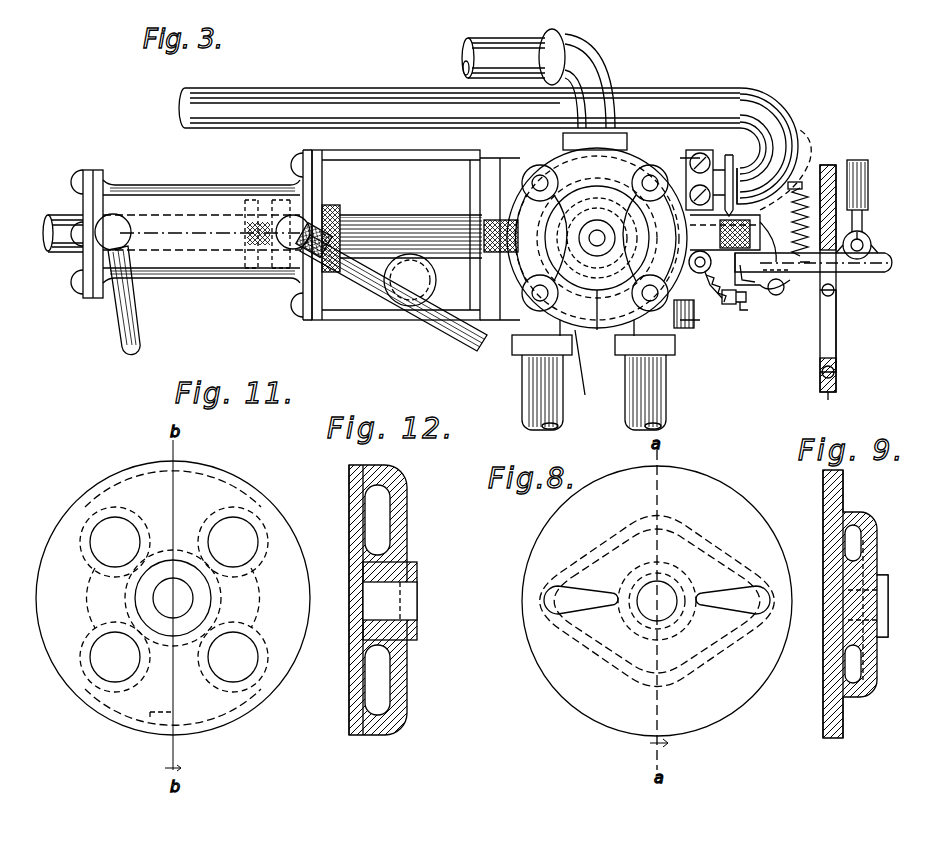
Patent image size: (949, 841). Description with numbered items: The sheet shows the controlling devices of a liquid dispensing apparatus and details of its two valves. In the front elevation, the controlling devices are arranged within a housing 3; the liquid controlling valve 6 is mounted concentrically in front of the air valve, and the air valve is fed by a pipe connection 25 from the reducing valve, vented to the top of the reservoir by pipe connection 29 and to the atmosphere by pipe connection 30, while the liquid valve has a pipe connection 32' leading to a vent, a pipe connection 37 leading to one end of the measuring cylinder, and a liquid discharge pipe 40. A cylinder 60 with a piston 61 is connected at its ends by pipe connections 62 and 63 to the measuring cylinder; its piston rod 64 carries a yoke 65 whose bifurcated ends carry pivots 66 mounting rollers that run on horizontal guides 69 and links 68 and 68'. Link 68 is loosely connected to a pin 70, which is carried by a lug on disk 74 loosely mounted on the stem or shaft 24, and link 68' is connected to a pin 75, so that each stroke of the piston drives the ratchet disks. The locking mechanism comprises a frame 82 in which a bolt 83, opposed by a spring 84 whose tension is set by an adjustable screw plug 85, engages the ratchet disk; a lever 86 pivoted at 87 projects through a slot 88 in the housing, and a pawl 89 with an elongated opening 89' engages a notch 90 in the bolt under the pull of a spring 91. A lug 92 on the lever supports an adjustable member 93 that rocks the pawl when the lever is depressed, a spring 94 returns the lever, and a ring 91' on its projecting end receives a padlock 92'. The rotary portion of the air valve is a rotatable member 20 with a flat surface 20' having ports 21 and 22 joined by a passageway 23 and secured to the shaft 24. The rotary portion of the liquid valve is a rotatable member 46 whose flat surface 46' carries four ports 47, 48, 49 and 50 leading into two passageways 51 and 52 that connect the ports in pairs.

In FIG. 3, the housing 3 is at (832, 395).
In FIG. 3, the liquid controlling valve 6 is at (628, 150).
In FIG. 8, the rotatable member 20 is at (657, 611).
In FIG. 9, the rotatable member 20 is at (855, 630).
In FIG. 8, the flat surface 20' is at (657, 607).
In FIG. 9, the flat surface 20' is at (806, 604).
In FIG. 8, the port 21 is at (752, 612).
In FIG. 8, the port 22 is at (562, 612).
In FIG. 8, the passageway or channel 23 is at (636, 678).
In FIG. 9, the passageway or channel 23 is at (850, 540).
In FIG. 3, the stem or shaft 24 is at (592, 246).
In FIG. 3, the pipe connection 25 is at (500, 40).
In FIG. 3, the pipe connection 29 is at (522, 400).
In FIG. 3, the pipe connection 30 is at (666, 388).
In FIG. 3, the pipe connection 32' is at (401, 305).
In FIG. 3, the pipe connection 37 is at (48, 224).
In FIG. 3, the liquid discharge pipe 40 is at (340, 88).
In FIG. 11, the rotatable member 46 is at (182, 605).
In FIG. 12, the rotatable member 46 is at (381, 612).
In FIG. 11, the flat surface 46' is at (189, 598).
In FIG. 12, the flat surface 46' is at (331, 612).
In FIG. 11, the port 47 is at (233, 540).
In FIG. 11, the port 48 is at (115, 540).
In FIG. 11, the port 49 is at (115, 660).
In FIG. 11, the port 50 is at (228, 668).
In FIG. 11, the passageway 51 is at (143, 482).
In FIG. 12, the passageway 51 is at (385, 538).
In FIG. 11, the passageway 52 is at (150, 722).
In FIG. 12, the passageway 52 is at (385, 668).
In FIG. 3, the cylinder 60 is at (162, 190).
In FIG. 3, the piston 61 is at (258, 195).
In FIG. 3, the pipe connection 62 is at (136, 312).
In FIG. 3, the pipe connection 63 is at (450, 337).
In FIG. 3, the piston rod 64 is at (392, 228).
In FIG. 3, the yoke 65 is at (505, 222).
In FIG. 3, the pivot 66 is at (532, 193).
In FIG. 3, the link 68 is at (591, 206).
In FIG. 3, the link 68' is at (597, 348).
In FIG. 3, the horizontal guides 69 is at (378, 162).
In FIG. 3, the pin 70 is at (650, 183).
In FIG. 3, the disk 74 is at (586, 348).
In FIG. 3, the pin 75 is at (678, 325).
In FIG. 3, the frame 82 is at (752, 282).
In FIG. 3, the bolt 83 is at (718, 170).
In FIG. 3, the spring 84 is at (760, 218).
In FIG. 3, the adjustable screw plug 85 is at (760, 230).
In FIG. 3, the lever 86 is at (809, 273).
In FIG. 3, the pivot 87 is at (706, 288).
In FIG. 3, the slot or opening 88 is at (836, 345).
In FIG. 3, the pawl 89 is at (825, 194).
In FIG. 3, the elongated opening 89' is at (773, 275).
In FIG. 3, the notch or catch 90 is at (745, 182).
In FIG. 3, the spring 91 is at (723, 311).
In FIG. 3, the ring 91' is at (875, 244).
In FIG. 3, the lug 92 is at (741, 319).
In FIG. 3, the padlock 92' is at (876, 196).
In FIG. 3, the adjustable member 93 is at (744, 305).
In FIG. 3, the spring 94 is at (858, 228).